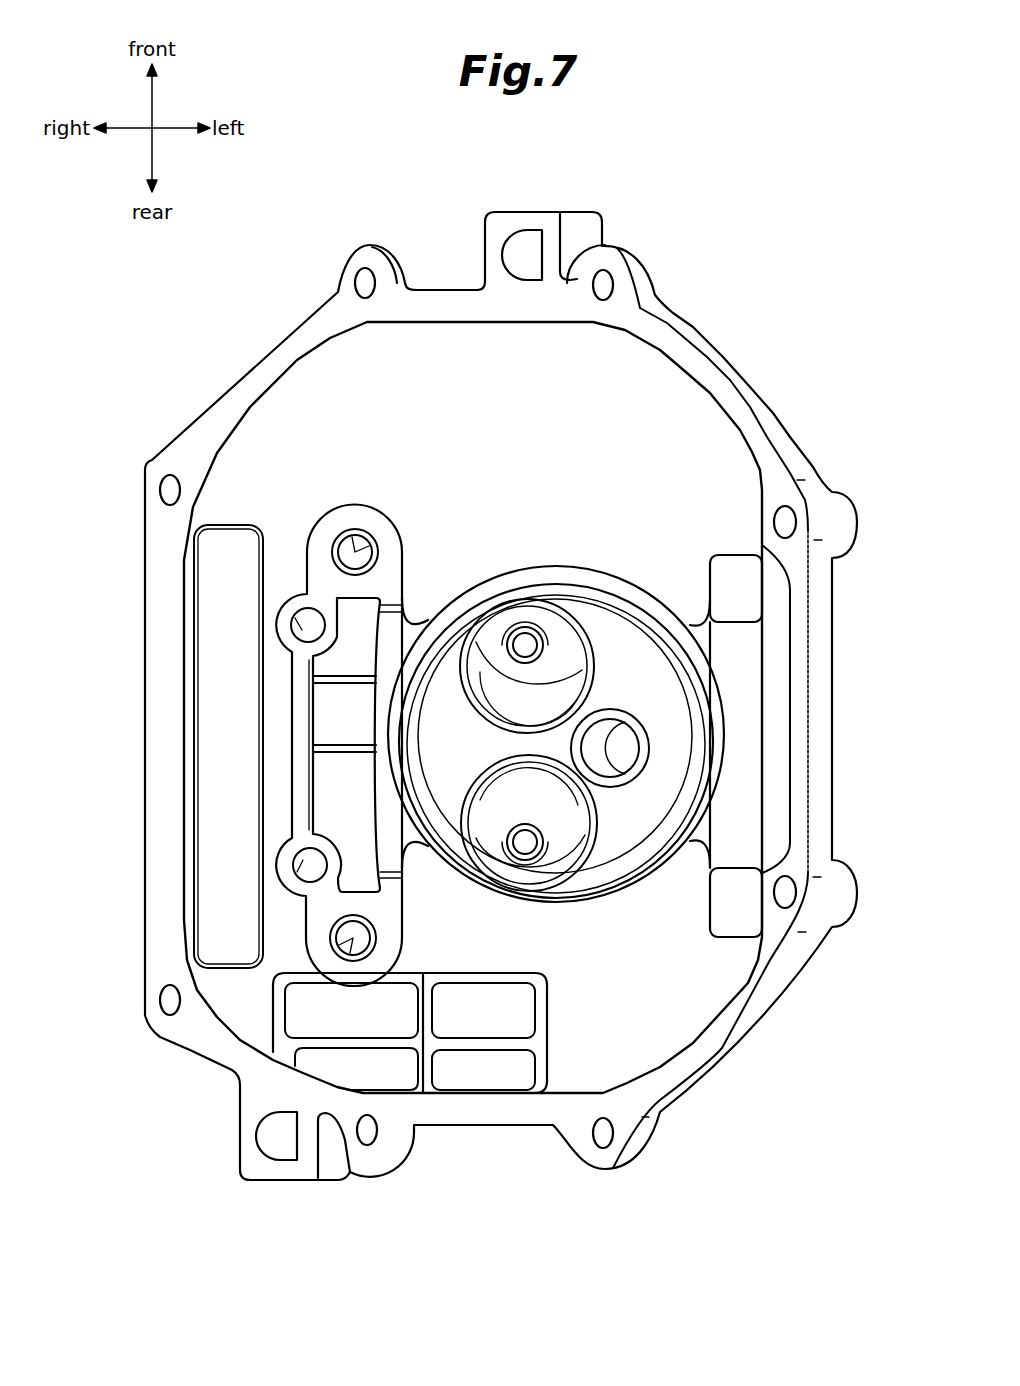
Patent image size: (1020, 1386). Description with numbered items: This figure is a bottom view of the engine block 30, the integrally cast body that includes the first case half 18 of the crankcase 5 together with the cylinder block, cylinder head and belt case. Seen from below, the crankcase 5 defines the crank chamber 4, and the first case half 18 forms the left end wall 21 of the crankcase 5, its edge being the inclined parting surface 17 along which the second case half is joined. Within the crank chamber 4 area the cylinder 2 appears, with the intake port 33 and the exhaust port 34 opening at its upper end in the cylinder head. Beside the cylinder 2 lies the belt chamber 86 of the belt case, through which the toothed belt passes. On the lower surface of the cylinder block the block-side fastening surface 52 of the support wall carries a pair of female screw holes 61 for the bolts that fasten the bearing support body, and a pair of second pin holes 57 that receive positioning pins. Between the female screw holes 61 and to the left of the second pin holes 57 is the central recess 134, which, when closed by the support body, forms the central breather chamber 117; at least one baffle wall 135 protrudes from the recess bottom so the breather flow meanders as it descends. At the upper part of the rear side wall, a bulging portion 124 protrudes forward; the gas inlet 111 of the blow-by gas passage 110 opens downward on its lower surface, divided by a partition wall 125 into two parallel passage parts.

The cylinder 2 is at (640, 643).
The crank chamber 4 is at (468, 389).
The crankcase 5 is at (692, 320).
The parting surface 17 is at (303, 342).
The first case half 18 is at (737, 370).
The left end wall 21 is at (751, 734).
The engine block 30 is at (795, 431).
The intake port 33 is at (560, 637).
The exhaust port 34 is at (570, 817).
The block-side fastening surface 52 is at (395, 577).
The second pin holes 57 is at (296, 625).
The female screw holes 61 is at (358, 550).
The belt chamber 86 is at (244, 678).
The blow-by gas passage 110 is at (312, 1017).
The gas inlet 111 is at (497, 1020).
The central breather chamber 117 is at (327, 718).
The bulging portion 124 is at (540, 1018).
The partition wall 125 is at (427, 1003).
The central recess 134 is at (320, 797).
The baffle wall 135 is at (320, 757).